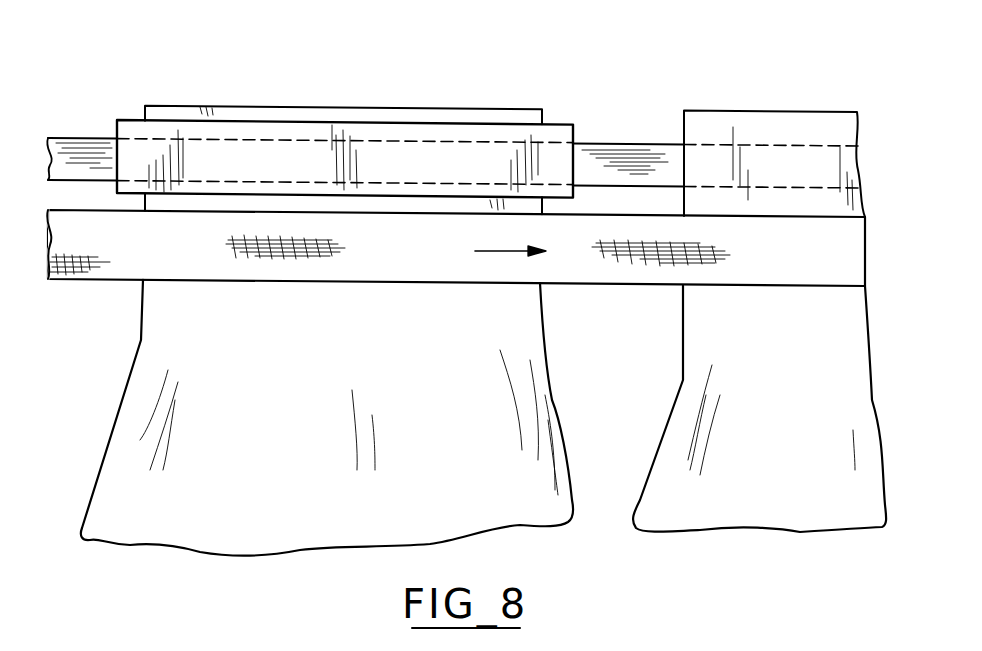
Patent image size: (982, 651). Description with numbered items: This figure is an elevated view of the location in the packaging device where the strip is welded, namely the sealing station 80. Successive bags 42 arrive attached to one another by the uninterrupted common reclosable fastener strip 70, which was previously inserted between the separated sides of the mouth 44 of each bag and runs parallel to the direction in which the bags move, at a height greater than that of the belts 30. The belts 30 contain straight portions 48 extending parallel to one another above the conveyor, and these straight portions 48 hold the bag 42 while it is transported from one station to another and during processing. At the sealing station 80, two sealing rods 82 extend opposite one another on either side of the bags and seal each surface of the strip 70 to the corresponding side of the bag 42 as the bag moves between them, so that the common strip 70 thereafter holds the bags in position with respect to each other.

The belts 30 is at (800, 262).
The bag 42 is at (518, 363).
The mouth 44 is at (380, 106).
The straight portions 48 is at (127, 258).
The reclosable fastener strip 70 is at (623, 165).
The sealing station 80 is at (493, 90).
The sealing rods 82 is at (270, 160).